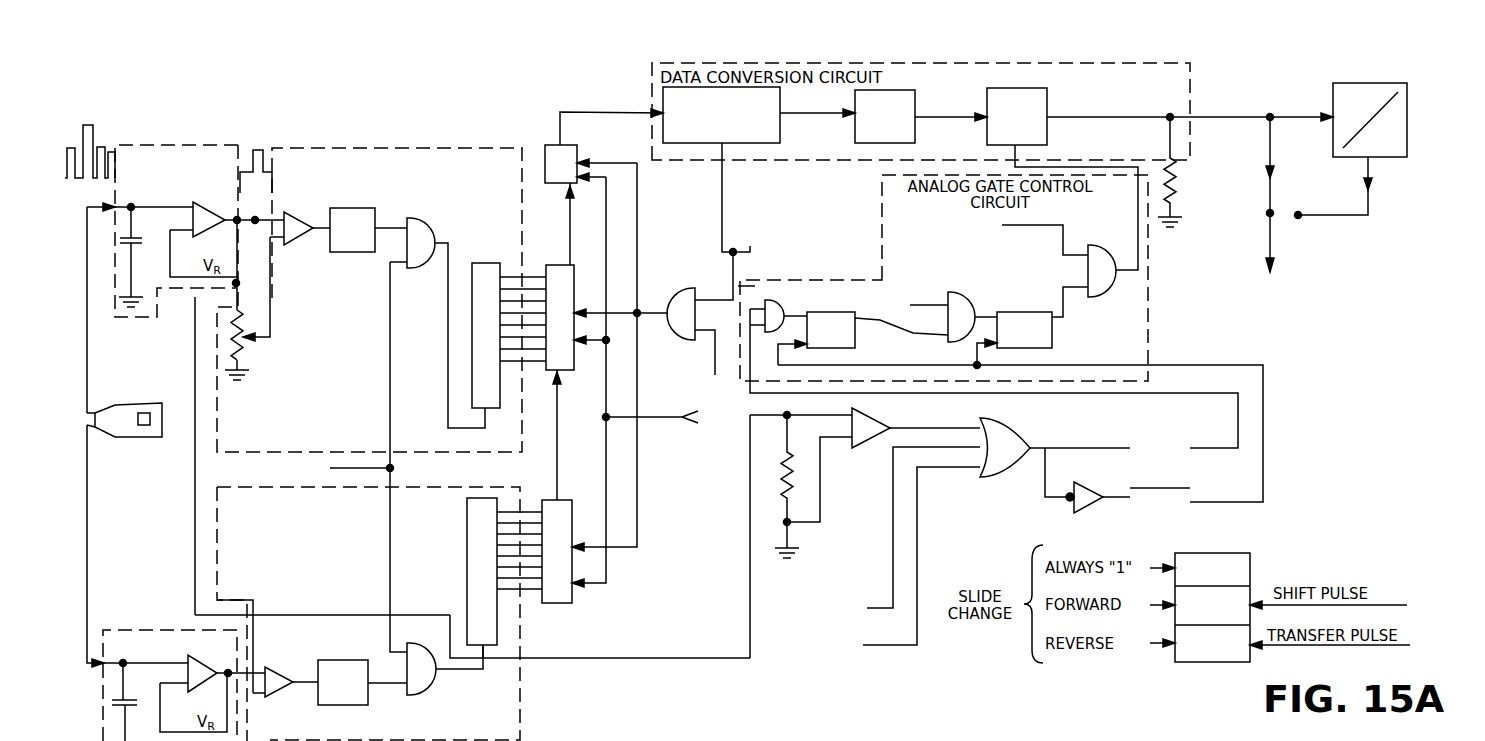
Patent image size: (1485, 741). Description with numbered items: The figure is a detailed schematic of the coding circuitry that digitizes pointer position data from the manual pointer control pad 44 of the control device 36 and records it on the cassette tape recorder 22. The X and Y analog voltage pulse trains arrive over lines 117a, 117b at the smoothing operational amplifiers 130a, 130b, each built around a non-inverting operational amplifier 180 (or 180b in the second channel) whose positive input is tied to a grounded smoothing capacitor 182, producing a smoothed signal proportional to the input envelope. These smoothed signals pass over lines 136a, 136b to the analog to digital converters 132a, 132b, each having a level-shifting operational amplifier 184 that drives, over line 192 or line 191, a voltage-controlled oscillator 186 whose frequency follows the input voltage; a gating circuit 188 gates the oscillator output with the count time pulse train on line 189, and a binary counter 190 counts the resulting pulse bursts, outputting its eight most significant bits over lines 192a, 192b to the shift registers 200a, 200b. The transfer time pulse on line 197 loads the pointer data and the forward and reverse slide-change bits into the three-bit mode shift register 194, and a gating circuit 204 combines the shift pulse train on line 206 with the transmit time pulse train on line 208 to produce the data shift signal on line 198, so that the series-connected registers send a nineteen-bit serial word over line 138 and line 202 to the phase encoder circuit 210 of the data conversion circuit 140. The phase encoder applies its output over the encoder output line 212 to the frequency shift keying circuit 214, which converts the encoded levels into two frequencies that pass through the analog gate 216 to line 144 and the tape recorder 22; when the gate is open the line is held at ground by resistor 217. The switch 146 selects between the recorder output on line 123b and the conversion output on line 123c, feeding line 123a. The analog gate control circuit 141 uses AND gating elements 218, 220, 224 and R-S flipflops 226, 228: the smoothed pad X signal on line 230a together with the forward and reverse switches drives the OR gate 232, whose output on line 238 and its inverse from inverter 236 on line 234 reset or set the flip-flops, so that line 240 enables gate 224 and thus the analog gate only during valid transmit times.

The cassette tape recorder 22 is at (1400, 86).
The control device 36 is at (115, 437).
The manual pointer control pad 44 is at (147, 425).
The line 117a is at (112, 200).
The line 117b is at (108, 663).
The line 123a is at (1273, 253).
The line 123b is at (1337, 216).
The line 123c is at (1266, 146).
The smoothing operational amplifier 130a is at (204, 144).
The smoothing operational amplifier 130b is at (122, 630).
The analog to digital converter 132a is at (386, 147).
The analog to digital converter 132b is at (217, 515).
The line 136a is at (270, 225).
The line 136b is at (250, 660).
The line 138 is at (572, 238).
The data conversion circuit 140 is at (1202, 83).
The analog gate control circuit 141 is at (1162, 328).
The line 144 is at (1248, 115).
The switch 146 is at (1265, 205).
The operational amplifier 180 is at (204, 200).
The operational amplifier 180b is at (203, 664).
The smoothing capacitor 182 is at (155, 228).
The level-shifting operational amplifier 184 is at (300, 212).
The voltage-controlled oscillator 186 is at (366, 208).
The gating circuit 188 is at (430, 224).
The line 189 is at (390, 370).
The binary counter 190 is at (490, 263).
The line 191 is at (306, 680).
The line 192 is at (331, 208).
The line 192a is at (534, 266).
The line 192b is at (531, 502).
The three-bit mode shift register 194 is at (544, 150).
The line 197 is at (680, 414).
The line 198 is at (628, 311).
The shift register 200a is at (576, 283).
The shift register 200b is at (573, 521).
The line 202 is at (607, 112).
The gating circuit 204 is at (688, 290).
The line 206 is at (724, 236).
The line 208 is at (705, 331).
The phase encoder circuit 210 is at (783, 108).
The encoder output line 212 is at (810, 113).
The frequency shift keying circuit 214 is at (920, 112).
The analog gate 216 is at (1049, 96).
The resistor 217 is at (1176, 192).
The AND gating element 218 is at (783, 302).
The AND gating element 220 is at (960, 292).
The AND gating element 224 is at (1100, 246).
The R-S flipflop 226 is at (858, 340).
The R-S flipflop 228 is at (1055, 342).
The line 230a is at (194, 368).
The OR gate 232 is at (1010, 425).
The line 234 is at (1100, 505).
The inverter 236 is at (1066, 500).
The line 238 is at (1094, 448).
The line 240 is at (1067, 300).